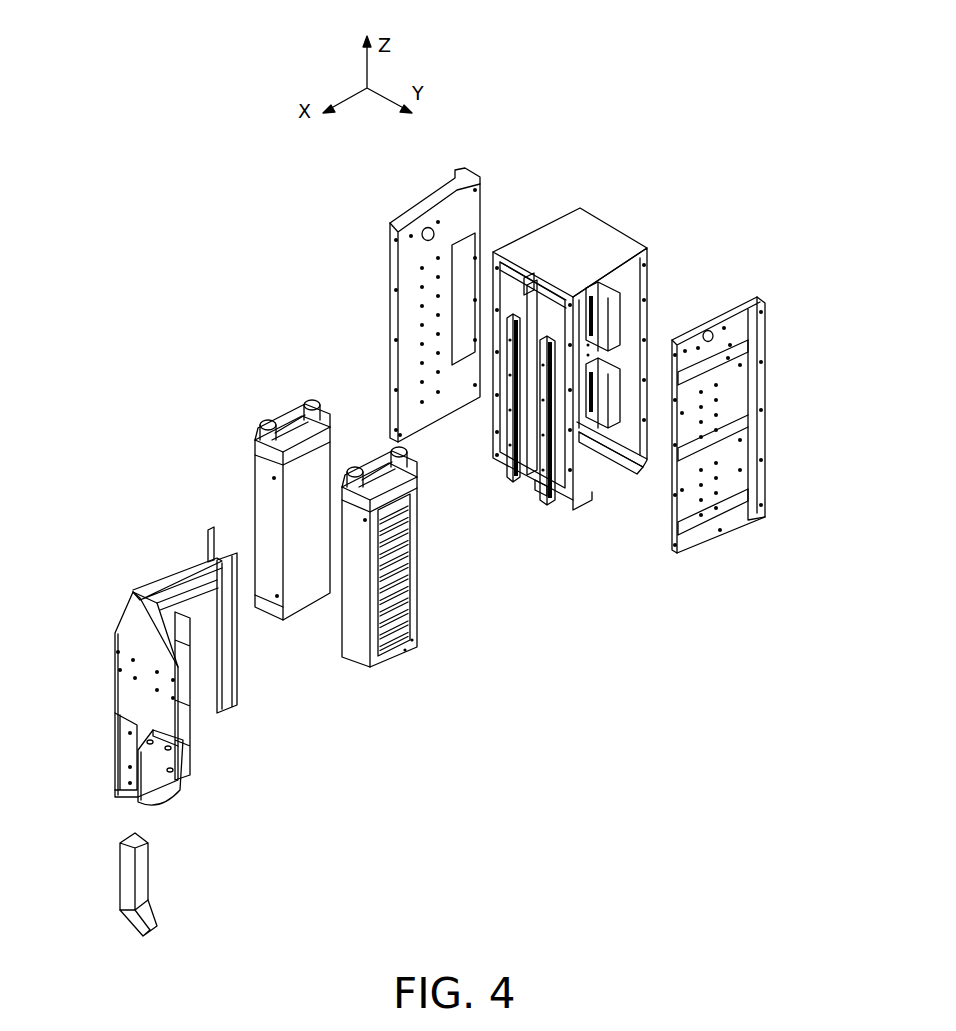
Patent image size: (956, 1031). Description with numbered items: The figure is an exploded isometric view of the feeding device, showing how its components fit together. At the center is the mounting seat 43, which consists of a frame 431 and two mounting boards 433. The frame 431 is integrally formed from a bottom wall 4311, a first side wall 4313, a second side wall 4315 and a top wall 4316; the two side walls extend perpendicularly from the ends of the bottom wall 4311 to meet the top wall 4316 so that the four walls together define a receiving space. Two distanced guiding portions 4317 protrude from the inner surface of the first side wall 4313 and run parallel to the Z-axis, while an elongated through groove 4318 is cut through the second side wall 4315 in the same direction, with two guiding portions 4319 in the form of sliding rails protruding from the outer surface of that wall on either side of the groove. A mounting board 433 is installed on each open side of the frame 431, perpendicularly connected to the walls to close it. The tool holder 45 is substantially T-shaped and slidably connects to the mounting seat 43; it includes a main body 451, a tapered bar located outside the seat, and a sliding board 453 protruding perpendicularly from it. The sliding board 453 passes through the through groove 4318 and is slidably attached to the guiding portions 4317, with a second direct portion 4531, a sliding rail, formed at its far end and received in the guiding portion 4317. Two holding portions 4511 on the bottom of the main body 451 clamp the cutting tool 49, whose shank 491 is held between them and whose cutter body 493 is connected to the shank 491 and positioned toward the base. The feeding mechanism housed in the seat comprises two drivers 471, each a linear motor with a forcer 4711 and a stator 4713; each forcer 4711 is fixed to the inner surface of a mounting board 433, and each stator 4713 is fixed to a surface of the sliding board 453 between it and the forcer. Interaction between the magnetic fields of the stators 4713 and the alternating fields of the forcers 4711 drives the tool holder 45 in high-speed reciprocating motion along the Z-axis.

The mounting seat 43 is at (748, 187).
The frame 431 is at (598, 213).
The bottom wall 4311 is at (597, 468).
The first side wall 4313 is at (632, 432).
The second side wall 4315 is at (562, 507).
The top wall 4316 is at (578, 228).
The guiding portion 4317 is at (617, 378).
The elongated through groove 4318 is at (552, 292).
The guiding portion 4319 is at (508, 462).
The mounting board 433 is at (737, 303).
The tool holder 45 is at (191, 538).
The main body 451 is at (135, 657).
The holding portion 4511 is at (158, 775).
The sliding board 453 is at (235, 713).
The second direct portion 4531 is at (237, 558).
The driver 471 is at (480, 690).
The forcer 4711 is at (375, 658).
The stator 4713 is at (207, 677).
The cutting tool 49 is at (271, 906).
The shank 491 is at (144, 878).
The cutter body 493 is at (152, 926).